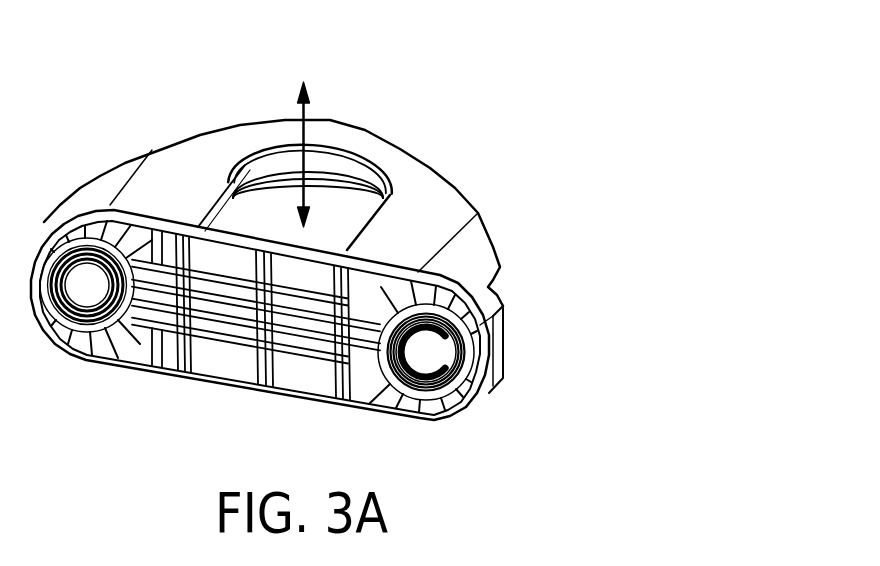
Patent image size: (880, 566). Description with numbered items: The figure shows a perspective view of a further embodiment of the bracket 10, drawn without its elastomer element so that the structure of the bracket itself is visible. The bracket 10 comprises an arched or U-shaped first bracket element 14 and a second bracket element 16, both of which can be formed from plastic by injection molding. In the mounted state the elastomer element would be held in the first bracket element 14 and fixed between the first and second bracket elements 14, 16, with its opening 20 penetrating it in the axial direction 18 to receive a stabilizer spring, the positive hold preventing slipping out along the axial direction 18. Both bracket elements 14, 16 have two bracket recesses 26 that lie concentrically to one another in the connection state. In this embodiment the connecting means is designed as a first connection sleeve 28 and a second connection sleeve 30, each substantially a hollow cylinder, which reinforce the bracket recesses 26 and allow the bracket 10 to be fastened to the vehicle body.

The bracket 10 is at (123, 118).
The first bracket element 14 is at (430, 202).
The second bracket element 16 is at (217, 355).
The axial direction 18 is at (305, 113).
The opening 20 is at (289, 212).
The bracket recess 26 is at (360, 401).
The first connection sleeve 28 is at (490, 304).
The second connection sleeve 30 is at (452, 420).